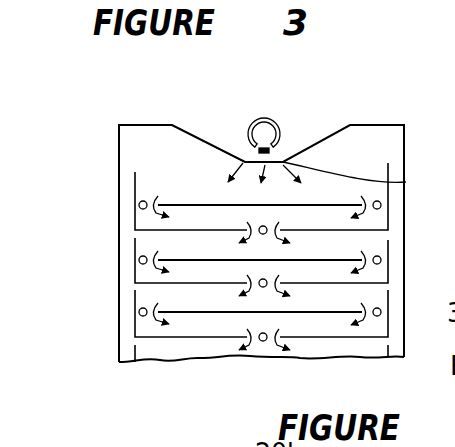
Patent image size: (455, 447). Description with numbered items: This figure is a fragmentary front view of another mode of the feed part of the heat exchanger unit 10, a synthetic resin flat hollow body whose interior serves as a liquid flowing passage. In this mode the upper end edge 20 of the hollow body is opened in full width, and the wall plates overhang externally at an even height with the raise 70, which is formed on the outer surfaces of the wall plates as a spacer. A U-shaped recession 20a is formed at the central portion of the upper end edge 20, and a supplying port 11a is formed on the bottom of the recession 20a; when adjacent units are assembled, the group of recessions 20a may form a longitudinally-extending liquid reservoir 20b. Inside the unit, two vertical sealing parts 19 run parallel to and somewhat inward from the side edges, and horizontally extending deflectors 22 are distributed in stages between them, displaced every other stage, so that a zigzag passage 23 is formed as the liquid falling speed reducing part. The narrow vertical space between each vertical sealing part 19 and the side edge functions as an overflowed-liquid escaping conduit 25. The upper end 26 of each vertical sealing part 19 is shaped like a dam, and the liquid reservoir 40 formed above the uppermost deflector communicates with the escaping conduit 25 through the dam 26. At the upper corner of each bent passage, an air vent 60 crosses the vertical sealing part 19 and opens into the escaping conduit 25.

The heat exchanger unit 10 is at (116, 158).
The liquid reservoir 40 is at (182, 172).
The U-shaped recession 20a is at (213, 146).
The longitudinally-extending liquid reservoir 20b is at (294, 151).
The upper end edge 20 is at (375, 125).
The supplying port 11a is at (365, 181).
The upper end of the vertical sealing part 26 is at (134, 186).
The overflowed-liquid escaping conduit 25 is at (127, 243).
The air vent 60 is at (131, 337).
The deflectors 22 is at (345, 312).
The vertical sealing parts 19 is at (388, 328).
The zigzag passage 23 is at (195, 327).
The raise 70 is at (382, 308).